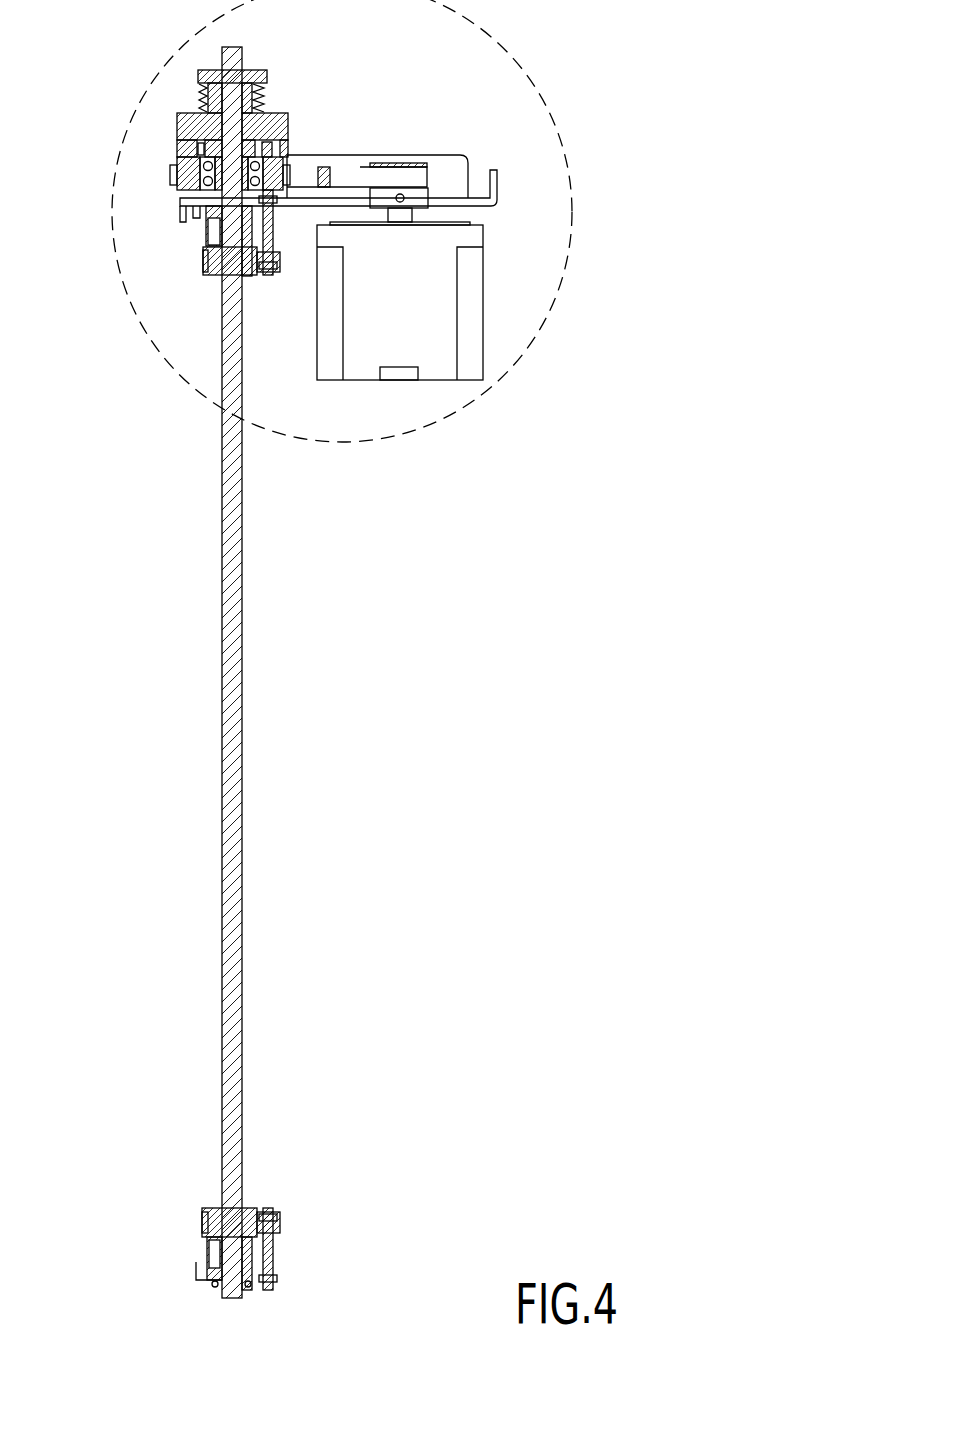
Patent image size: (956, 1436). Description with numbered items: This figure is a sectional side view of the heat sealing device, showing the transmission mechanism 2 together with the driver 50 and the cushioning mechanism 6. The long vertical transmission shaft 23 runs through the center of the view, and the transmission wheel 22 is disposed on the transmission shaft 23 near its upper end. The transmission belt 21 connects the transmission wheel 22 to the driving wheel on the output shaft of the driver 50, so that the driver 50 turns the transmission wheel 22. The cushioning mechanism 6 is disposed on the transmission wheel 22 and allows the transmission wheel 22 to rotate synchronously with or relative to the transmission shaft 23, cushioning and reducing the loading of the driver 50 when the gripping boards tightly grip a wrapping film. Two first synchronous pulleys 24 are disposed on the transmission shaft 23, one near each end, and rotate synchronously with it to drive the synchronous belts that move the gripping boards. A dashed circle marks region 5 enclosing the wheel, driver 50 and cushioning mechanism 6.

The transmission mechanism 2 is at (292, 592).
The drive unit 5 is at (572, 183).
The cushioning mechanism 6 is at (152, 126).
The transmission belt 21 is at (347, 178).
The transmission wheel 22 is at (190, 178).
The transmission shaft 23 is at (231, 822).
The first synchronous pulley 24 is at (215, 268).
The driver 50 is at (425, 315).